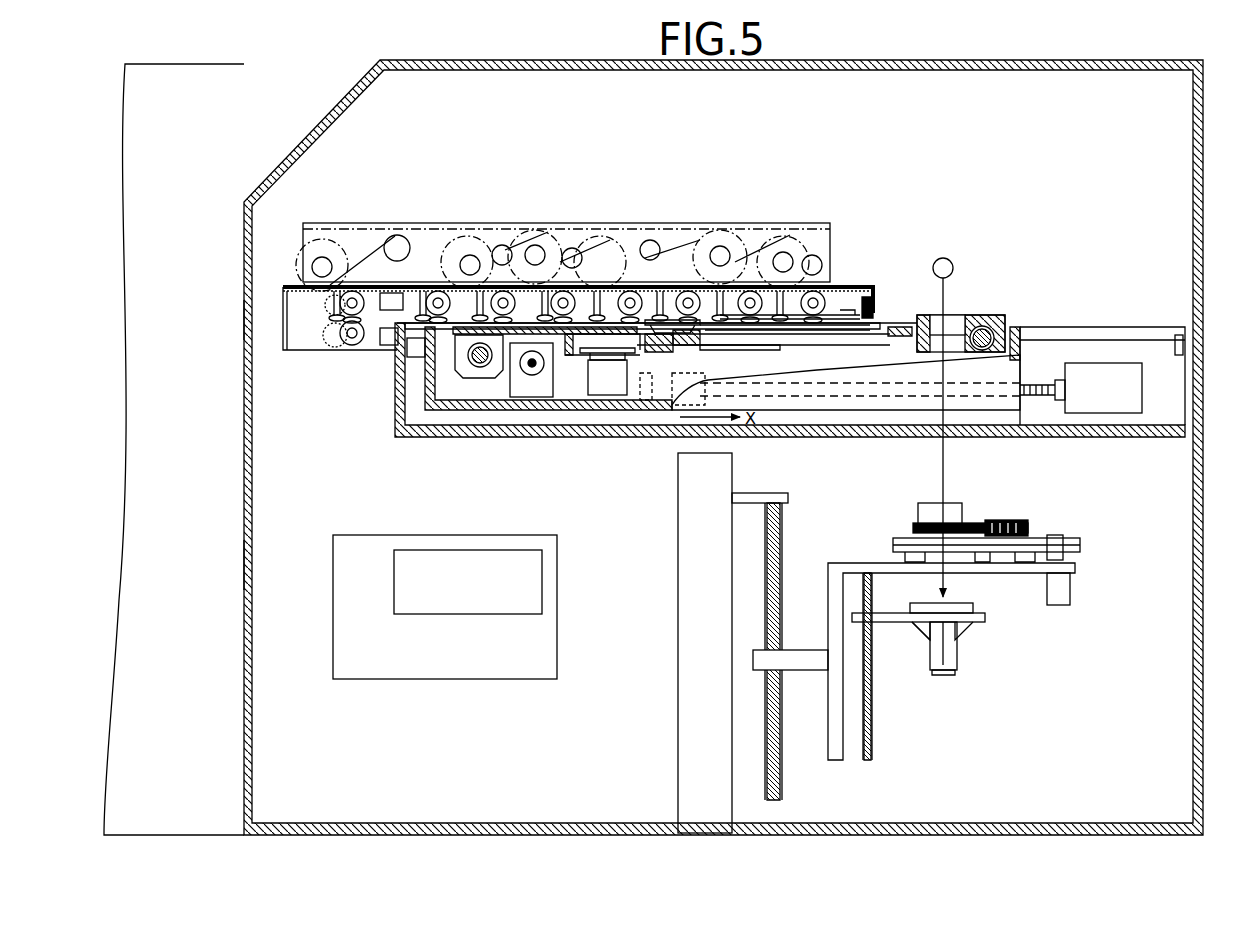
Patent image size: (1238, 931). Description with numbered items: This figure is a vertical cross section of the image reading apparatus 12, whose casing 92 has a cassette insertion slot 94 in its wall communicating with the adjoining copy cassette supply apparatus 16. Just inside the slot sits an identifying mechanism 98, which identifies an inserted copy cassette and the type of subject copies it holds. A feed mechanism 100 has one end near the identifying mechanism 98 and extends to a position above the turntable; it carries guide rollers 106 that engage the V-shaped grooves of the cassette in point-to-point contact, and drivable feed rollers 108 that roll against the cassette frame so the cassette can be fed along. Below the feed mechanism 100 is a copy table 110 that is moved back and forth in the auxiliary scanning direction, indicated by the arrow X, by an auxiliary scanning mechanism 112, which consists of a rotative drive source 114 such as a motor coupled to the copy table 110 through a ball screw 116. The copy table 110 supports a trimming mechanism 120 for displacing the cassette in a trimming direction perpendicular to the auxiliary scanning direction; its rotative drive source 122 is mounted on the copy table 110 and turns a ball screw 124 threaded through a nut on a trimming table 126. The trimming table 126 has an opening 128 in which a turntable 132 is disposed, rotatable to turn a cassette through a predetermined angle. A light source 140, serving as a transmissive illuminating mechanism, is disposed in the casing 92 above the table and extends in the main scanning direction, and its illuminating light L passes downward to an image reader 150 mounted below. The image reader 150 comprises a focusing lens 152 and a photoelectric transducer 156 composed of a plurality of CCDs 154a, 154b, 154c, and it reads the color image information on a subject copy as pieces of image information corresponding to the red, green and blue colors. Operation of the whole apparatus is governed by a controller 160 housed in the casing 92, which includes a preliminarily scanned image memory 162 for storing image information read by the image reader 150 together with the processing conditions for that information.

The copy cassette supply apparatus 16 is at (232, 66).
The image reading apparatus 12 is at (352, 100).
The cassette insertion slot 94 is at (244, 322).
The casing 92 is at (254, 562).
The feed mechanism 100 is at (522, 222).
The feed rollers 108 is at (438, 291).
The guide rollers 106 is at (342, 322).
The identifying mechanism 98 is at (380, 348).
The copy table 110 is at (412, 403).
The trimming table 126 is at (462, 372).
The ball screw 124 is at (537, 366).
The trimming mechanism 120 is at (502, 398).
The rotative drive source 122 is at (535, 398).
The turntable 132 is at (896, 325).
The opening 128 is at (922, 314).
The light source 140 is at (950, 258).
The illuminating light L is at (945, 478).
The auxiliary scanning mechanism 112 is at (1088, 362).
The rotative drive source 114 is at (1125, 406).
The ball screw 116 is at (1034, 398).
The image reader 150 is at (1084, 578).
The focusing lens 152 is at (960, 513).
The CCD 154a is at (916, 636).
The CCD 154b is at (946, 674).
The CCD 154c is at (975, 636).
The photoelectric transducer 156 is at (970, 642).
The controller 160 is at (498, 670).
The preliminarily scanned image memory 162 is at (542, 586).